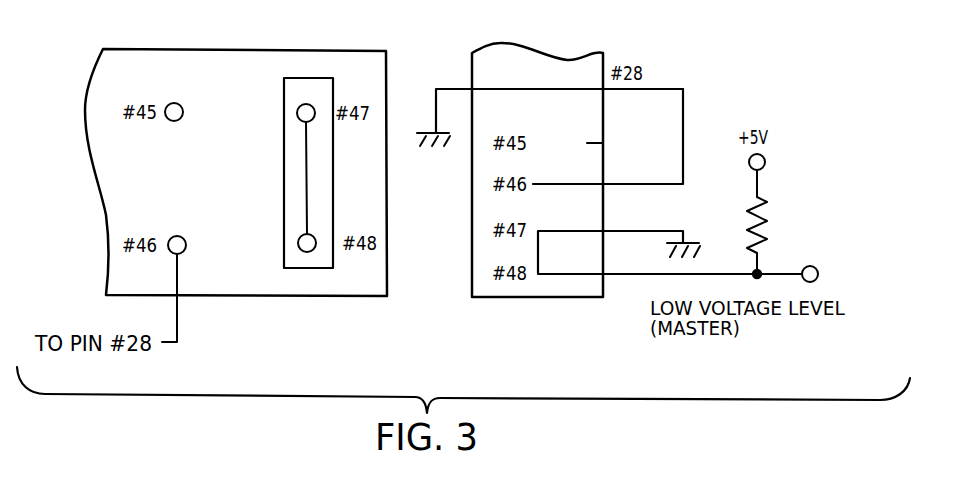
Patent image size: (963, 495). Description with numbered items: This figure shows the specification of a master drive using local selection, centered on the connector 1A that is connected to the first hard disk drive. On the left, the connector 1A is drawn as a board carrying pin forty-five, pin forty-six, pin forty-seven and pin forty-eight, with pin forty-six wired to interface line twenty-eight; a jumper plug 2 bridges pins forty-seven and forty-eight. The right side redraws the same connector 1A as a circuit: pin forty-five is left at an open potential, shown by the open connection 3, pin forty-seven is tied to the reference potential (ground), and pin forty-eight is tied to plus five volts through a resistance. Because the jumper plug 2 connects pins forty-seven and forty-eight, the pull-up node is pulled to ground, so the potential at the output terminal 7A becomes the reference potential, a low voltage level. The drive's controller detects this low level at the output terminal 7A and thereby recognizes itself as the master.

The connector 1A is at (250, 49).
The jumper plug 2 is at (284, 87).
The open connection 3 is at (684, 92).
The output terminal 7A is at (810, 266).